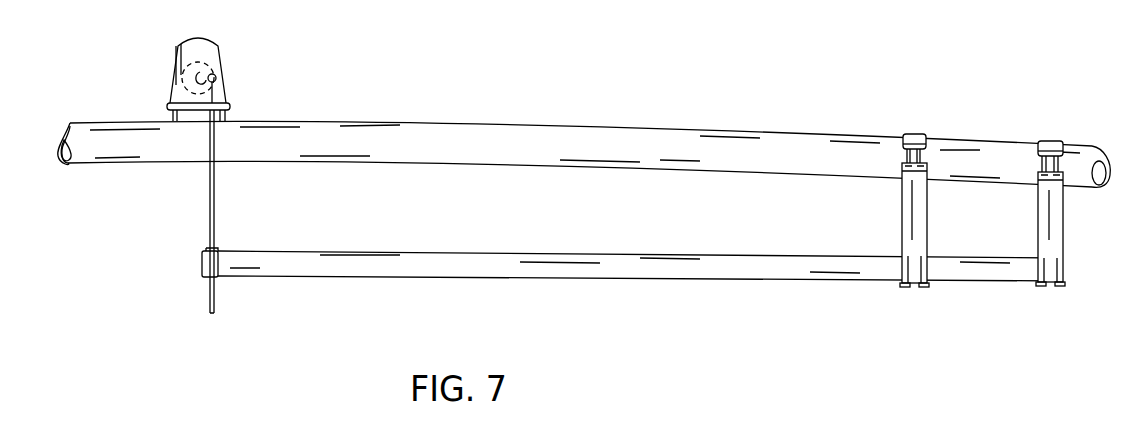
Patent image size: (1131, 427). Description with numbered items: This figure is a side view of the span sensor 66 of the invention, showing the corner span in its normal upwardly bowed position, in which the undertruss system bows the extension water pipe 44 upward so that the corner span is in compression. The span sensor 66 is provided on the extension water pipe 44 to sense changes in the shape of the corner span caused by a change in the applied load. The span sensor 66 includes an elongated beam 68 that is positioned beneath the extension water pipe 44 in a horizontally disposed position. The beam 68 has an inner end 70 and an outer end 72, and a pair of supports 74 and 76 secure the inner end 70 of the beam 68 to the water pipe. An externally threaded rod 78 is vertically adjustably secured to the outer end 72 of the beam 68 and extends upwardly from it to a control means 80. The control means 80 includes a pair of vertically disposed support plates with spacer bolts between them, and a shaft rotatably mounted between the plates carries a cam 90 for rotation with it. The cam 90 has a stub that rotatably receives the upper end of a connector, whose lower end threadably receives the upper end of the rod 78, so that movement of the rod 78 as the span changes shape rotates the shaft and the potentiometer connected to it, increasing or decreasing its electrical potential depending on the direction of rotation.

The extension water pipe 44 is at (648, 152).
The span sensor 66 is at (584, 234).
The elongated beam 68 is at (553, 265).
The inner end 70 is at (1067, 270).
The outer end 72 is at (201, 262).
The support 74 is at (1047, 225).
The support 76 is at (912, 206).
The externally threaded rod 78 is at (216, 183).
The control means 80 is at (246, 79).
The cam 90 is at (173, 59).